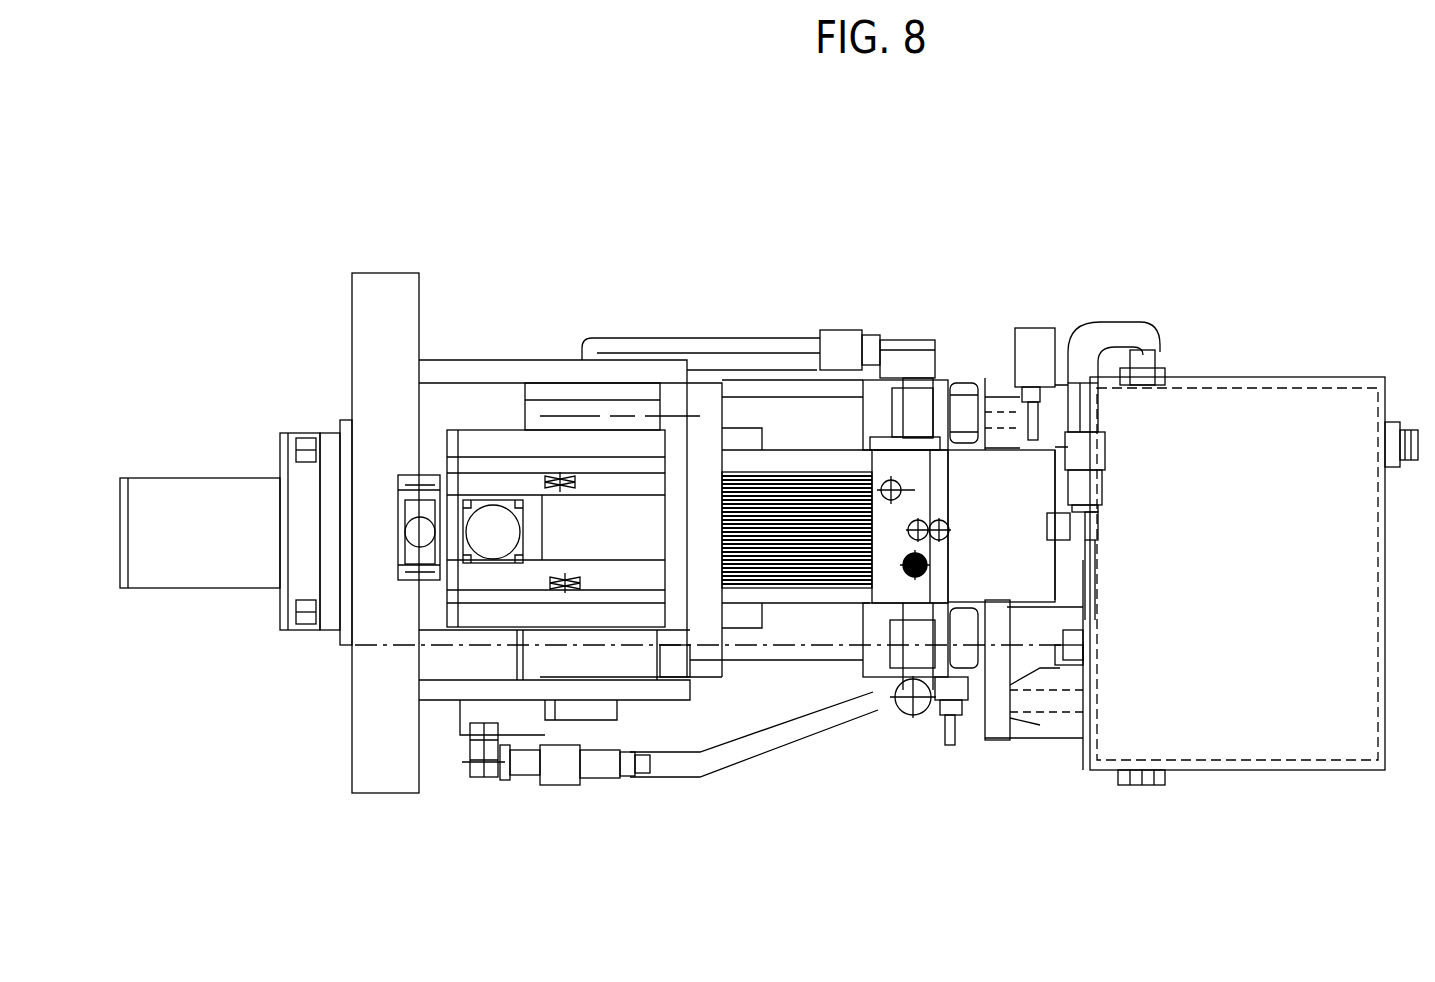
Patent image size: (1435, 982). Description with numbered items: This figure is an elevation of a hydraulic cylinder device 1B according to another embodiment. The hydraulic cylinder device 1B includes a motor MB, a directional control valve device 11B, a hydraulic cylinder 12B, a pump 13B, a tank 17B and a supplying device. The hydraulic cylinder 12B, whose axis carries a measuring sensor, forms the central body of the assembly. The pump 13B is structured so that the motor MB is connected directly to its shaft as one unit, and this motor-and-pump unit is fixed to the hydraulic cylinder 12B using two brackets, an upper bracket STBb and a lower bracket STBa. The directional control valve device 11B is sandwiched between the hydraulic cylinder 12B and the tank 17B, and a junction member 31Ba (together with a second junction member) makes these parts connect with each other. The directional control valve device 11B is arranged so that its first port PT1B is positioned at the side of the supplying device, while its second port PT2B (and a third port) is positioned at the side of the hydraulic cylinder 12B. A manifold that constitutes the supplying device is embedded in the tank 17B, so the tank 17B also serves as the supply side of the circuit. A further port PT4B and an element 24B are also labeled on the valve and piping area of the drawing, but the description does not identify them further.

The hydraulic cylinder device 1B is at (805, 177).
The bracket STBb is at (482, 372).
The bracket STBa is at (452, 690).
The motor MB is at (637, 525).
The hydraulic cylinder 12B is at (773, 437).
The pump 13B is at (810, 583).
The fourth port PT4B is at (967, 375).
The valve 24B is at (1037, 328).
The directional control valve device 11B is at (1070, 384).
The tank 17B is at (1327, 740).
The first port PT1B is at (1100, 688).
The second port PT2B is at (930, 712).
The junction member 31Ba is at (1007, 570).